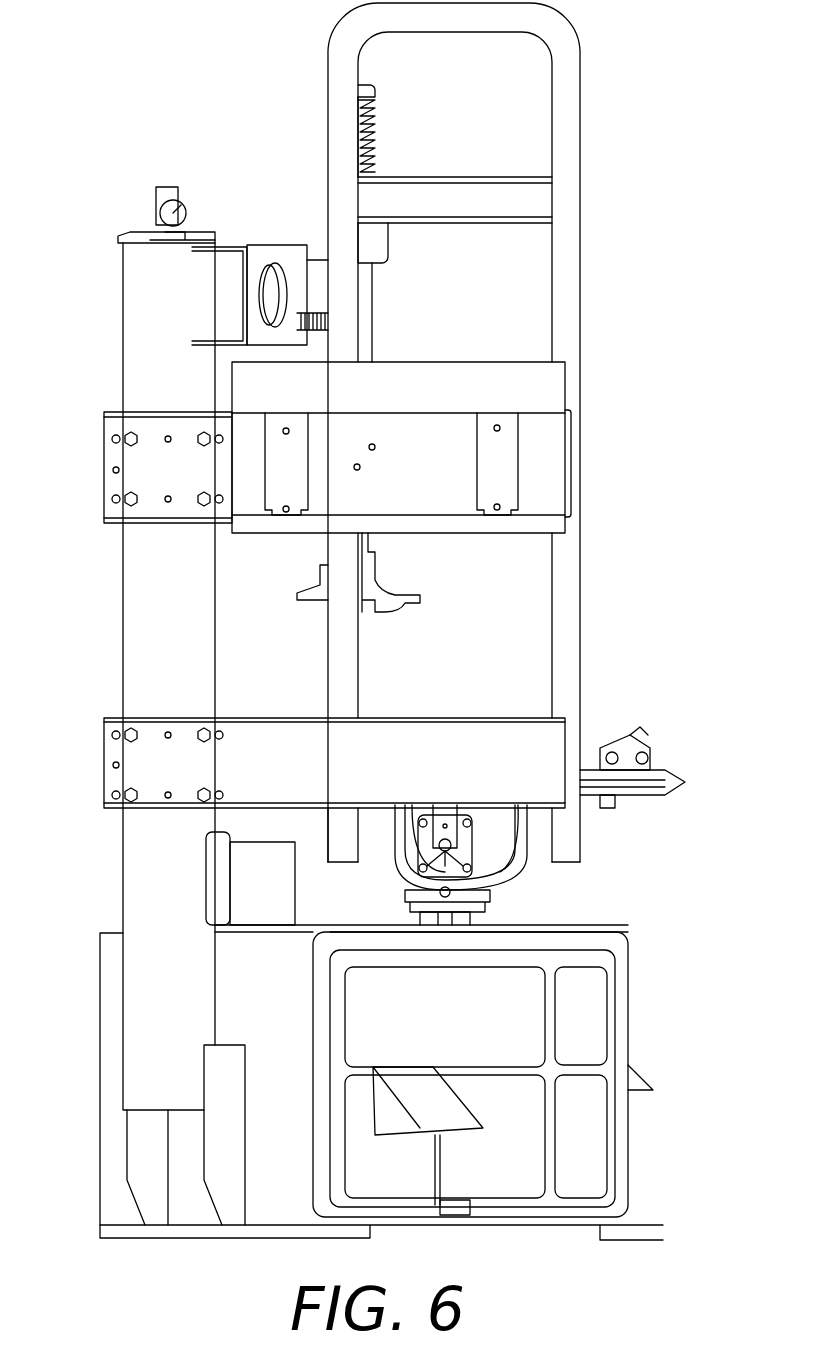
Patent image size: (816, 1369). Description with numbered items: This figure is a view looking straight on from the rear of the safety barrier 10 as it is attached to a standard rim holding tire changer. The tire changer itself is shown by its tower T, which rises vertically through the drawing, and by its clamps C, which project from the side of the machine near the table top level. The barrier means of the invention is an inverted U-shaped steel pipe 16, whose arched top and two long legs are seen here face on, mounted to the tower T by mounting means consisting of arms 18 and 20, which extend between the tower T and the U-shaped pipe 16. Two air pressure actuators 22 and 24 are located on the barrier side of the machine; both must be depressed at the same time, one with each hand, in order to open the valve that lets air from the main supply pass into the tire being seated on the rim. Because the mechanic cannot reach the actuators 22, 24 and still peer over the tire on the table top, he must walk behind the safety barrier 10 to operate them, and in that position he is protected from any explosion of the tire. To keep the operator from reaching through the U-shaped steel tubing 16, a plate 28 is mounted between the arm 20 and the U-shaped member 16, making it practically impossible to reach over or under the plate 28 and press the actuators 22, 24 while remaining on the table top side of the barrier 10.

The safety barrier 10 is at (640, 337).
The inverted U-shaped steel pipe 16 is at (572, 143).
The arm 18 is at (467, 784).
The arm 20 is at (430, 500).
The air pressure actuator 22 is at (508, 468).
The air pressure actuator 24 is at (296, 457).
The plate 28 is at (407, 370).
The tower T is at (133, 602).
The clamps C is at (635, 712).